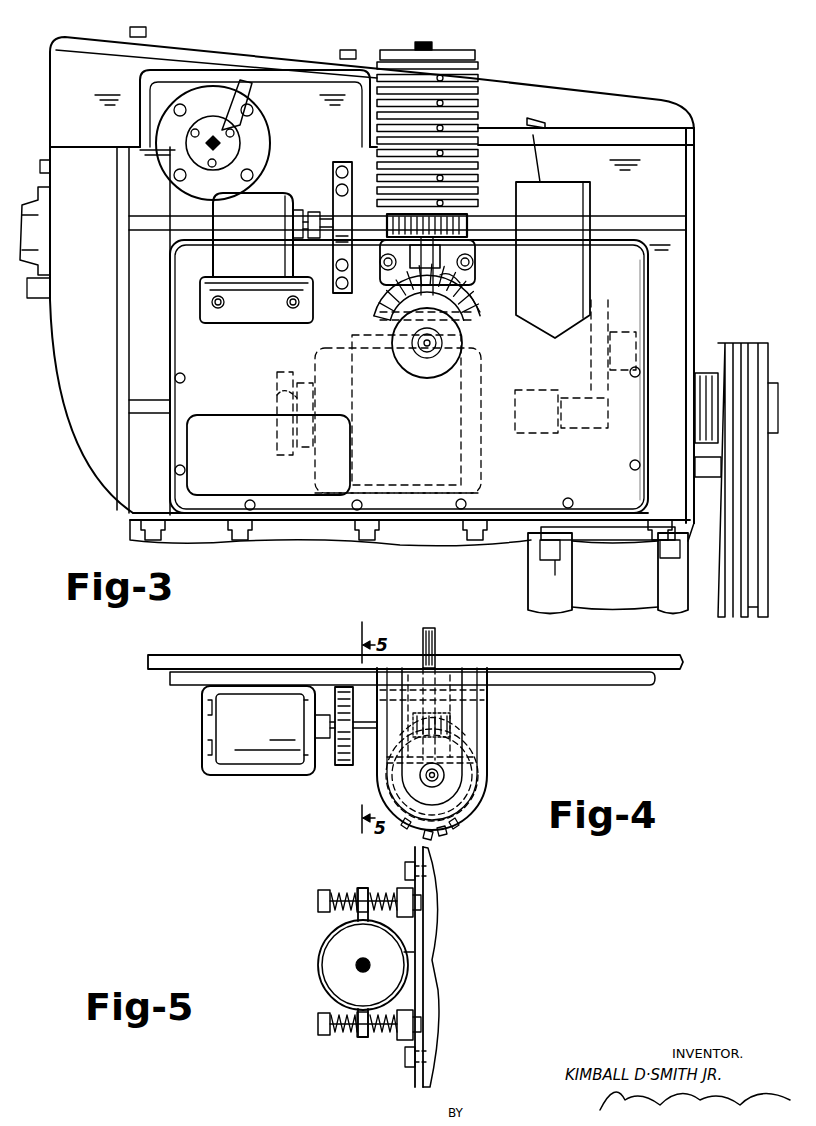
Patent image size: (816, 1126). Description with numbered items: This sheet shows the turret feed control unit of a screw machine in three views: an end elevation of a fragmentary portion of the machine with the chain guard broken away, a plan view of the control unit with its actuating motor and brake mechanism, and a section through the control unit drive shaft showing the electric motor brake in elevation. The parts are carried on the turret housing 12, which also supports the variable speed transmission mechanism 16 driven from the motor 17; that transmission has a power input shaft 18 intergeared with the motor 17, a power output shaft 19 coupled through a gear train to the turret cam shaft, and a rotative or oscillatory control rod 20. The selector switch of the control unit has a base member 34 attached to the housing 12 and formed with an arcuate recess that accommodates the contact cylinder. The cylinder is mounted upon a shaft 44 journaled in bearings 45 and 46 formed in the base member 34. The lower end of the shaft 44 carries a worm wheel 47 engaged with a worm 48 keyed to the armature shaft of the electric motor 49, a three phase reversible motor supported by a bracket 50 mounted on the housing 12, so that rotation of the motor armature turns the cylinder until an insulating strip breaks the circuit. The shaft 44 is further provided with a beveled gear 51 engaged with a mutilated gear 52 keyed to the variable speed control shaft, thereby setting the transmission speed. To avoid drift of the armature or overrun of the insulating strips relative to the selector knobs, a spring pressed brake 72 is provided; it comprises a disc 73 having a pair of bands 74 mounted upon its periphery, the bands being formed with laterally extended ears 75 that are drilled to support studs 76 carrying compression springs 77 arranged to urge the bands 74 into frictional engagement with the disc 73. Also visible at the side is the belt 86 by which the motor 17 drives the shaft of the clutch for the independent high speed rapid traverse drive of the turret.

In FIG. 3, the turret housing 12 is at (118, 303).
In FIG. 4, the turret housing 12 is at (187, 662).
In FIG. 5, the turret housing 12 is at (430, 905).
In FIG. 3, the variable speed transmission mechanism 16 is at (461, 457).
In FIG. 3, the motor 17 is at (591, 577).
In FIG. 3, the power input shaft 18 is at (638, 400).
In FIG. 3, the power output shaft 19 is at (270, 398).
In FIG. 3, the control rod 20 is at (427, 343).
In FIG. 4, the control rod 20 is at (423, 647).
In FIG. 3, the base member 34 is at (381, 272).
In FIG. 4, the base member 34 is at (475, 740).
In FIG. 3, the shaft 44 is at (422, 45).
In FIG. 4, the shaft 44 is at (443, 780).
In FIG. 3, the bearing 45 is at (436, 52).
In FIG. 3, the bearing 46 is at (395, 246).
In FIG. 3, the worm wheel 47 is at (470, 222).
In FIG. 4, the worm wheel 47 is at (383, 800).
In FIG. 3, the worm 48 is at (553, 260).
In FIG. 4, the worm 48 is at (457, 707).
In FIG. 3, the electric motor 49 is at (277, 210).
In FIG. 4, the electric motor 49 is at (225, 735).
In FIG. 3, the bracket 50 is at (210, 313).
In FIG. 3, the beveled gear 51 is at (456, 283).
In FIG. 3, the mutilated gear 52 is at (456, 301).
In FIG. 3, the spring pressed brake 72 is at (336, 207).
In FIG. 4, the spring pressed brake 72 is at (337, 762).
In FIG. 5, the spring pressed brake 72 is at (405, 947).
In FIG. 5, the disc 73 is at (330, 975).
In FIG. 5, the bands 74 is at (327, 937).
In FIG. 5, the ears 75 is at (360, 890).
In FIG. 5, the studs 76 is at (320, 898).
In FIG. 5, the compression springs 77 is at (382, 895).
In FIG. 3, the belt 86 is at (733, 514).